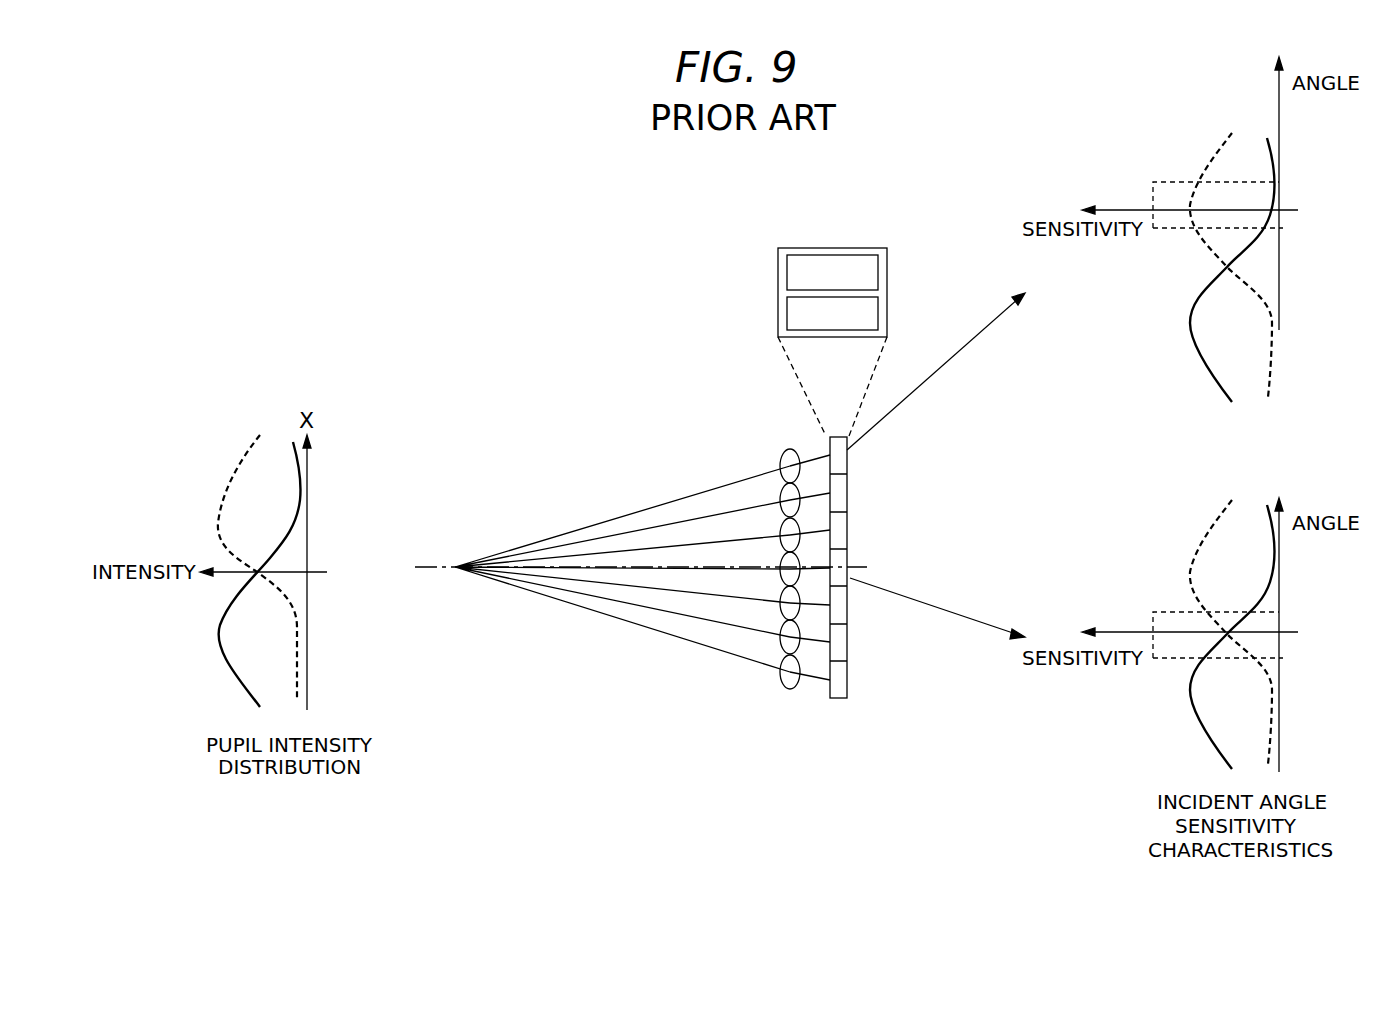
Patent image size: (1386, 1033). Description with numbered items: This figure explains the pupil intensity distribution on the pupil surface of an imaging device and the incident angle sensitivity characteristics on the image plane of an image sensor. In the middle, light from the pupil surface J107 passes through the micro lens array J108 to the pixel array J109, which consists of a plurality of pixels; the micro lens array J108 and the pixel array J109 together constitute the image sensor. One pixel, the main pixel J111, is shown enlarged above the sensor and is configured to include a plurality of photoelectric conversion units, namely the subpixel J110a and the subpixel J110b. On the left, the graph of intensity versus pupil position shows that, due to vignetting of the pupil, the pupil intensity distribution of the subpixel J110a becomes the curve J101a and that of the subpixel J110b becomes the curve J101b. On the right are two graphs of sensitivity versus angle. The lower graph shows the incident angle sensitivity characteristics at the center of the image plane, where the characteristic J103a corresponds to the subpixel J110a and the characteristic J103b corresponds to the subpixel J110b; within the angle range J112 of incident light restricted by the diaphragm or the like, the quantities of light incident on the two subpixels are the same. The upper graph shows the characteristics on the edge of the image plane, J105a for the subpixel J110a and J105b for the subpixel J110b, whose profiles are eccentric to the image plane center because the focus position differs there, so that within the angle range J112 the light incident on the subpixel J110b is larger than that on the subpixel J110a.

The pupil intensity distribution of subpixel J110a J101a is at (223, 657).
The pupil intensity distribution of subpixel J110b J101b is at (227, 480).
The incident angle sensitivity characteristic of subpixel J110a at image plane cente J103a is at (1192, 715).
The incident angle sensitivity characteristic of subpixel J110b at image plane cente J103b is at (1192, 553).
The incident angle sensitivity characteristic of subpixel J110a at image plane edge J105a is at (1192, 350).
The incident angle sensitivity characteristic of subpixel J110b at image plane edge J105b is at (1227, 140).
The pupil surface J107 is at (455, 571).
The micro lens array J108 is at (790, 689).
The pixel array J109 is at (838, 700).
The subpixel J110a is at (805, 272).
The subpixel J110b is at (805, 313).
The pixel (main pixel) J111 is at (833, 248).
The angle range of incident light J112 is at (1153, 196).